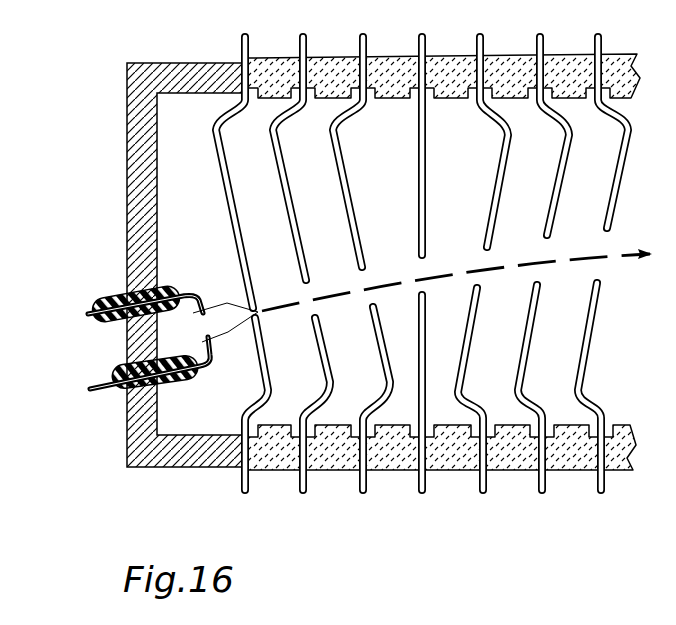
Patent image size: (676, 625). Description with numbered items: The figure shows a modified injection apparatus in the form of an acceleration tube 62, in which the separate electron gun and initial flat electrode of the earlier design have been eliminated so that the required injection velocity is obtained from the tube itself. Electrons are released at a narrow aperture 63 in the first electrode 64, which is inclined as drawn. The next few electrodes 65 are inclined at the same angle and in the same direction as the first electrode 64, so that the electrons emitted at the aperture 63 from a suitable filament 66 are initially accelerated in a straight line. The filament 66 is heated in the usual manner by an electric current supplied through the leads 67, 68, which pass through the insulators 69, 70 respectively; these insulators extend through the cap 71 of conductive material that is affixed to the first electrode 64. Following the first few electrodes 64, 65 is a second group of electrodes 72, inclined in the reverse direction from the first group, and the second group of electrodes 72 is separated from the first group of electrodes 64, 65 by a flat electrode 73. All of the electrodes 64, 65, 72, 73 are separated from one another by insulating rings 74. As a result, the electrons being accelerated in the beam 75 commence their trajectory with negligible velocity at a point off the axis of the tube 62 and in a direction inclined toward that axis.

The acceleration tube 62 is at (395, 480).
The narrow aperture 63 is at (259, 310).
The first electrode 64 is at (248, 490).
The electrodes 65 is at (304, 491).
The filament 66 is at (245, 333).
The lead 67 is at (208, 303).
The lead 68 is at (211, 365).
The insulator 69 is at (165, 285).
The insulator 70 is at (186, 388).
The cap 71 is at (177, 63).
The second group of electrodes 72 is at (482, 491).
The flat electrode 73 is at (422, 491).
The insulating rings 74 is at (283, 471).
The beam 75 is at (287, 313).